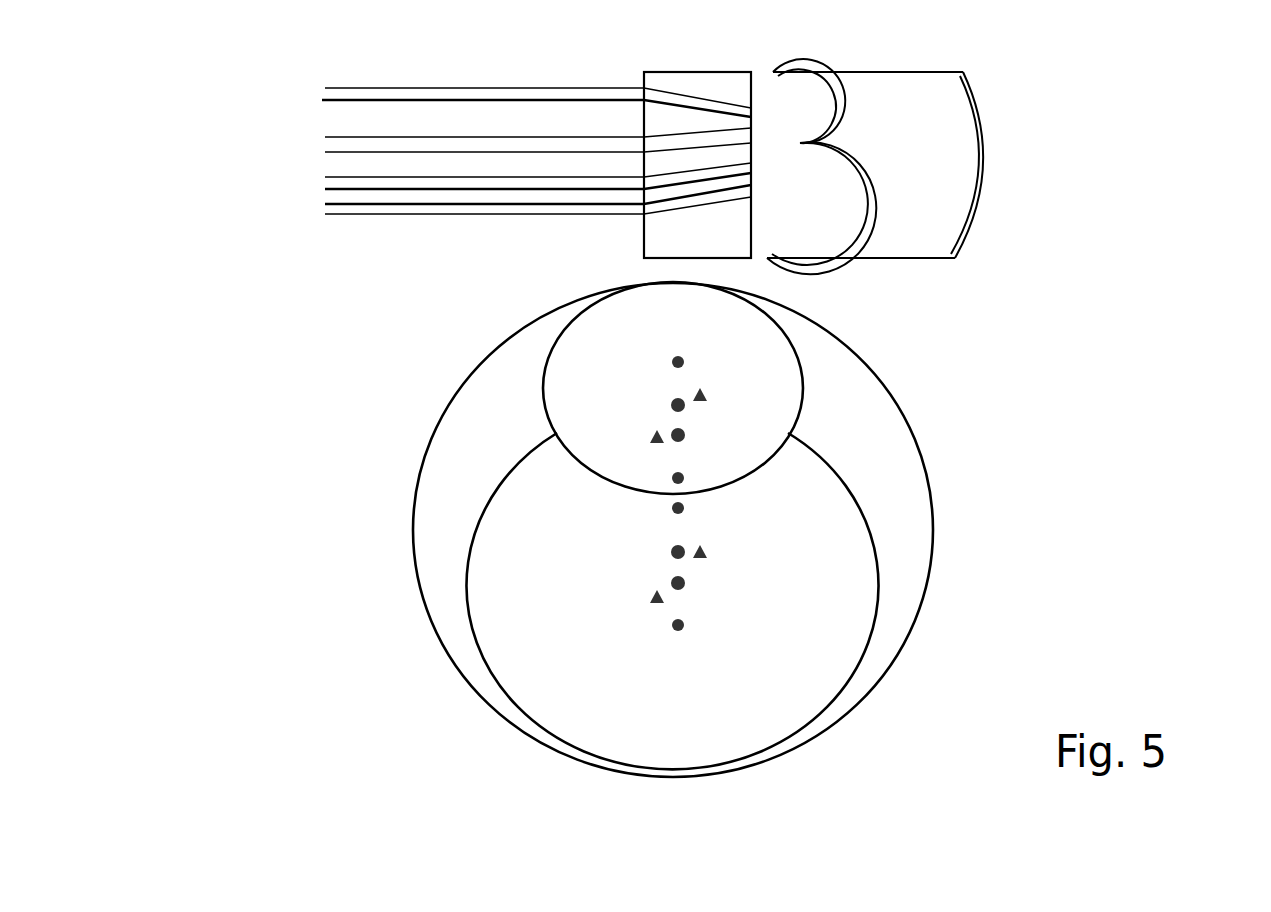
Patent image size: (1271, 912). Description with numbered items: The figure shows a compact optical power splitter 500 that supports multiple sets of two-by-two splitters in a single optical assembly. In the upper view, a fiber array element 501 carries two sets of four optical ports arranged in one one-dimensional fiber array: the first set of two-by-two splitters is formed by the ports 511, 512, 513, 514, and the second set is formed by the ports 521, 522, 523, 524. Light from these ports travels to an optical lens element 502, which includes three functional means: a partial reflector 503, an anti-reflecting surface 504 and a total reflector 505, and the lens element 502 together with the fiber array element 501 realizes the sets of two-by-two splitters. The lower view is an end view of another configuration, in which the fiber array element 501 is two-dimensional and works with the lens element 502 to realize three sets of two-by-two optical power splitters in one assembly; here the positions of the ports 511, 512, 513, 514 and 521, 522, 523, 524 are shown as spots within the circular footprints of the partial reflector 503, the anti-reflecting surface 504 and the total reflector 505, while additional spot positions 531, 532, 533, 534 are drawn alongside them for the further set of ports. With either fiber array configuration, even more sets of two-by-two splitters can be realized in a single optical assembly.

The optical system 500 is at (1142, 183).
The fiber array element 501 is at (707, 60).
The optical lens element 502 is at (875, 60).
The partial reflector 503 is at (820, 120).
The anti-reflecting surface 504 is at (820, 225).
The total reflector 505 is at (985, 122).
The optical port 511 is at (468, 102).
The optical port 512 is at (333, 130).
The optical port 513 is at (310, 187).
The optical port 514 is at (308, 208).
The optical port 521 is at (457, 86).
The optical port 522 is at (503, 157).
The optical port 523 is at (350, 175).
The optical port 524 is at (493, 217).
The first focal point 531 is at (712, 395).
The second focal point 532 is at (648, 430).
The third focal point 533 is at (712, 558).
The fourth focal point 534 is at (638, 600).